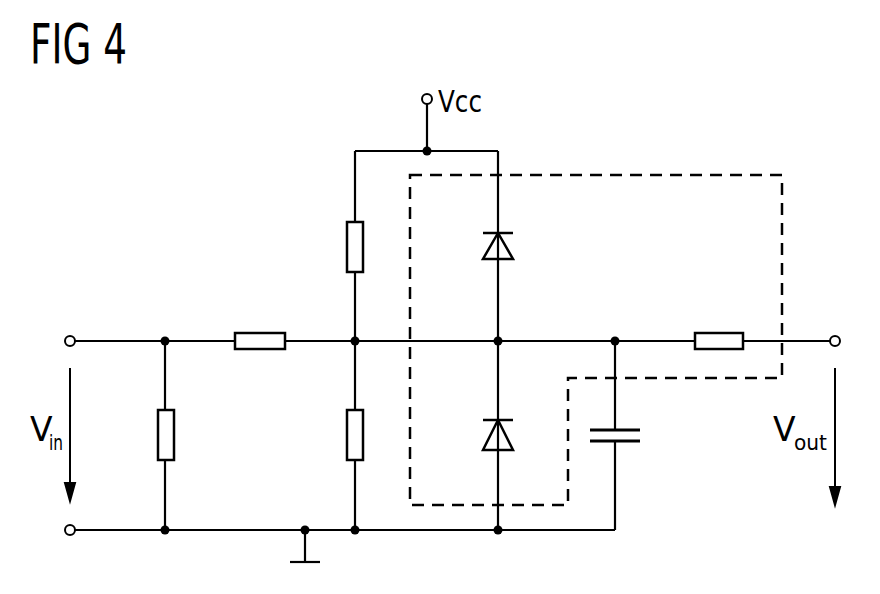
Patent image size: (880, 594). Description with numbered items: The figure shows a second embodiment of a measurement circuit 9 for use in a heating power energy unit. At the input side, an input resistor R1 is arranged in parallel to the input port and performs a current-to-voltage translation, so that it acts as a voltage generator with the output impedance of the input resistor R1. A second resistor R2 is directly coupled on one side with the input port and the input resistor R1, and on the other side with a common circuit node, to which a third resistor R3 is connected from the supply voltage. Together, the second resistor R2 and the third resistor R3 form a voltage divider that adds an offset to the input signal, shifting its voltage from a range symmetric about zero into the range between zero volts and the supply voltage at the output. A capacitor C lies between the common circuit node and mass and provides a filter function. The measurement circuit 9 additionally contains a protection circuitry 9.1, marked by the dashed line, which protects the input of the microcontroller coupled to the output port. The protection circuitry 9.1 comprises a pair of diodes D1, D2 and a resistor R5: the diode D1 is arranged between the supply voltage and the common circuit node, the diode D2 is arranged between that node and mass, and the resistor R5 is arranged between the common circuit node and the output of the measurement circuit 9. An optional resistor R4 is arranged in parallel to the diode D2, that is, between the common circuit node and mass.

The measurement circuit 9 is at (740, 79).
The protection circuitry 9.1 is at (611, 175).
The input resistor R1 is at (158, 438).
The second resistor R2 is at (260, 333).
The third resistor R3 is at (347, 247).
The resistor R4 is at (347, 437).
The resistor R5 is at (718, 333).
The diode D1 is at (489, 248).
The diode D2 is at (488, 433).
The capacitor C is at (641, 434).